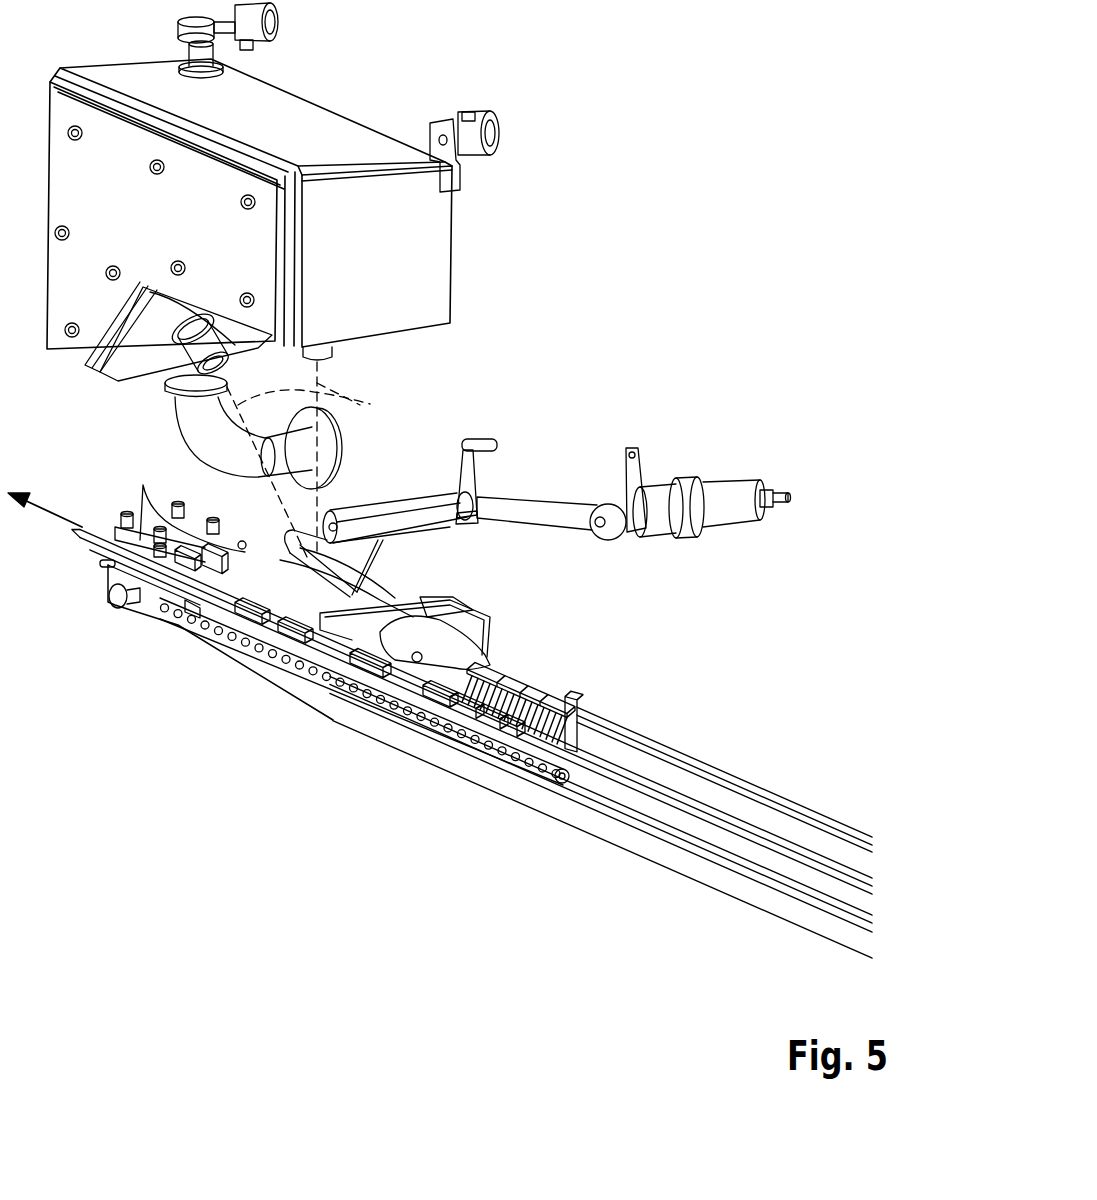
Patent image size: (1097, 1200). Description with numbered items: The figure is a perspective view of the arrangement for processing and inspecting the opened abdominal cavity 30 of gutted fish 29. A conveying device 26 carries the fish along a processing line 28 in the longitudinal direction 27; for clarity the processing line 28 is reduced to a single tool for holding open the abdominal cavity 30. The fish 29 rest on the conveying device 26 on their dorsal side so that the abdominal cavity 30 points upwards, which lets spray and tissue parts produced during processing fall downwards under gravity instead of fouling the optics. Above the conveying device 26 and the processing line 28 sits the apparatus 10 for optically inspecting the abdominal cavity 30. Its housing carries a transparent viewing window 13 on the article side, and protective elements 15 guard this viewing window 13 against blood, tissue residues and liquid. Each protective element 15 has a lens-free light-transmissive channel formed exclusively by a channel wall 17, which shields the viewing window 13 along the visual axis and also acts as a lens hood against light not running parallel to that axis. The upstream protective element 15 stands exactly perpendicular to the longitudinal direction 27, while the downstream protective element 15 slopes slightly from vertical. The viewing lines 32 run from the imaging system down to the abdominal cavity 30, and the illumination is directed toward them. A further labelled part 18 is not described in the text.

The apparatus 10 is at (342, 91).
The transparent viewing window 13 is at (170, 332).
The protective element 15 is at (184, 380).
The channel wall 17 is at (180, 355).
The bracket plate 18 is at (130, 353).
The conveying device 26 is at (470, 765).
The longitudinal direction 27 is at (55, 512).
The processing line 28 is at (720, 442).
The gutted fish 29 is at (263, 583).
The opened abdominal cavity 30 is at (387, 600).
The viewing lines 32 is at (312, 459).